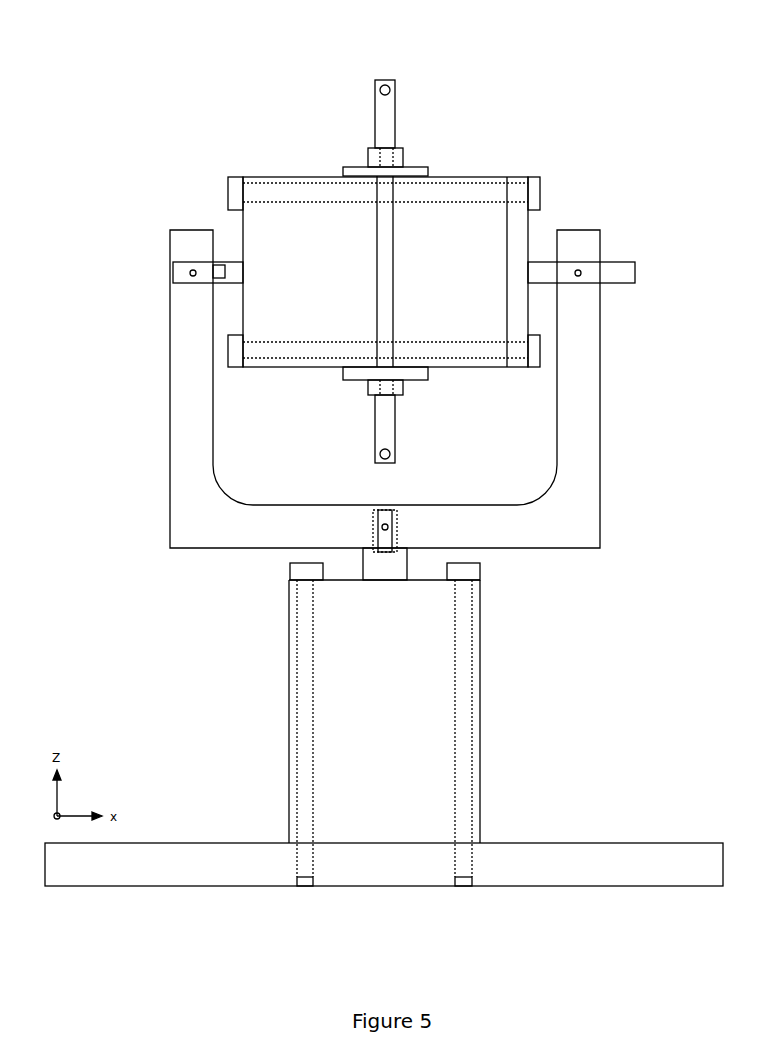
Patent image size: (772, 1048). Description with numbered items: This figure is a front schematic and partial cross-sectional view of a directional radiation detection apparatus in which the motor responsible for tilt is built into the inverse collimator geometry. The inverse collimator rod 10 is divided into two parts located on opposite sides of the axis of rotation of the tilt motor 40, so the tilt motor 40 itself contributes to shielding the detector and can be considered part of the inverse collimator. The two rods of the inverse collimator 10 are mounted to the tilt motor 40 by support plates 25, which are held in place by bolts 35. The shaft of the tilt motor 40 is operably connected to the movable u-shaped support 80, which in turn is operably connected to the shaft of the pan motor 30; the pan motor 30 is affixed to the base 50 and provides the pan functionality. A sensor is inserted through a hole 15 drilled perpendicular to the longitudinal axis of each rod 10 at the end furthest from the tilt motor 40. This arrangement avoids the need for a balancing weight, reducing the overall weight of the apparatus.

The inverse collimator rod 10 is at (390, 138).
The hole 15 is at (395, 83).
The support plates 25 is at (363, 173).
The pan motor 30 is at (384, 724).
The bolts 35 is at (382, 263).
The tilt motor 40 is at (384, 272).
The base 50 is at (522, 867).
The movable u-shaped support 80 is at (568, 463).